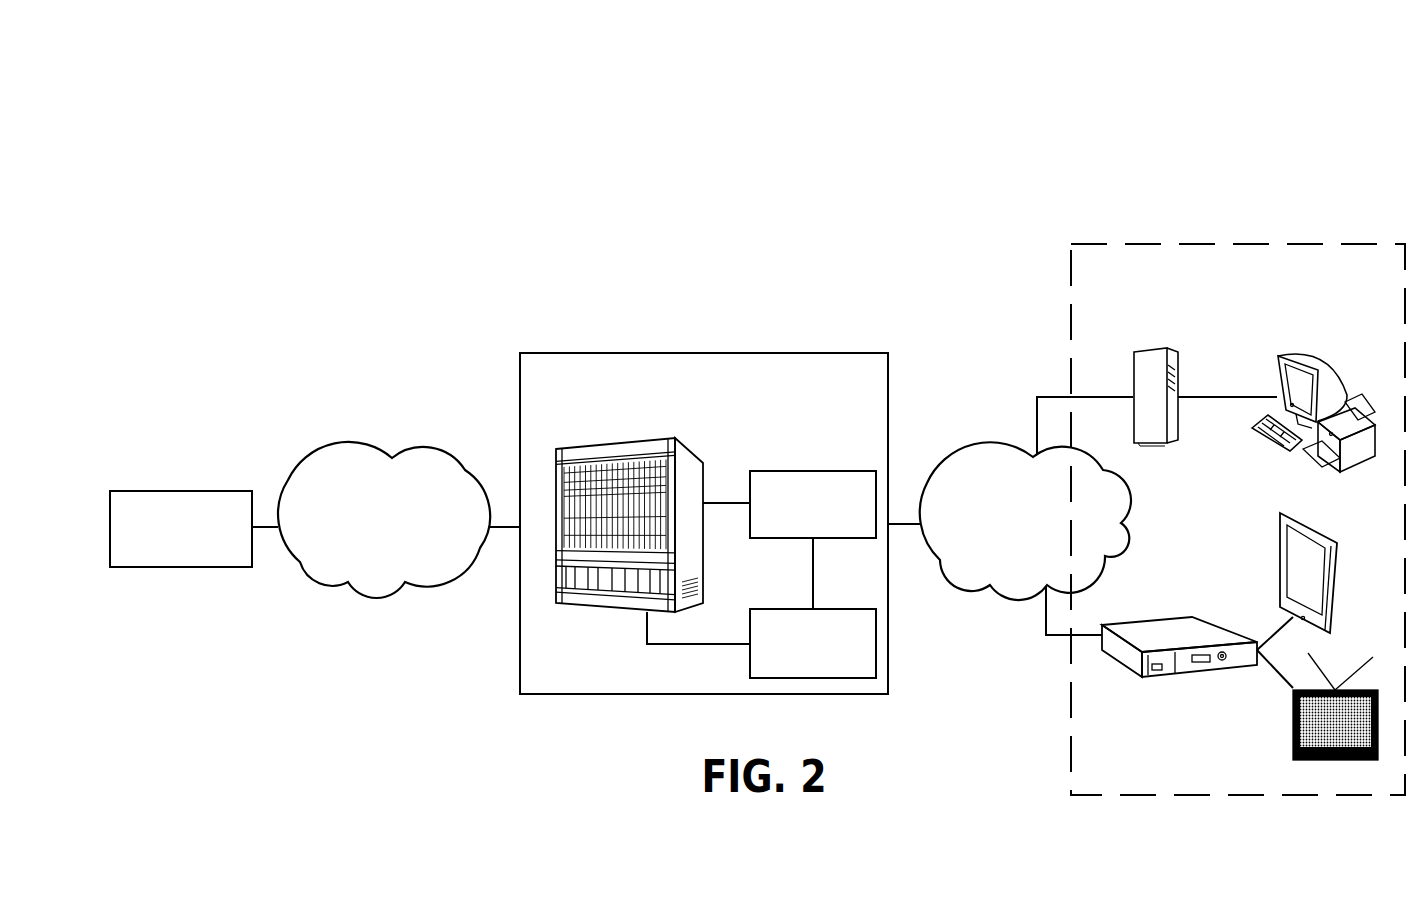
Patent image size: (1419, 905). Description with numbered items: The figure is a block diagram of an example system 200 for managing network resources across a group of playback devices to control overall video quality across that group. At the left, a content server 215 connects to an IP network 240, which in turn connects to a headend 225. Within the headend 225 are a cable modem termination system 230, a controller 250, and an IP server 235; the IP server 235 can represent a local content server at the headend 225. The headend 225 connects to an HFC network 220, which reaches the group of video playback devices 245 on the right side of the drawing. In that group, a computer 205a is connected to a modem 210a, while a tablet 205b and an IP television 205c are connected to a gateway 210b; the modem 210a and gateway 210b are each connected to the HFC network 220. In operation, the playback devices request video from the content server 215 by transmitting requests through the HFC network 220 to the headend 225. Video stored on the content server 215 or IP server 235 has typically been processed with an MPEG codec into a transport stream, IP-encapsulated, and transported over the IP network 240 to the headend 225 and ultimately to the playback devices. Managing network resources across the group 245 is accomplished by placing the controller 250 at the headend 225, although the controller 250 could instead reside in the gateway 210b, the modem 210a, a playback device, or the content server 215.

The content delivery system 200 is at (1348, 145).
The content server 215 is at (181, 489).
The IP network 240 is at (382, 598).
The headend 225 is at (842, 384).
The cable modem termination system (CMTS) 230 is at (607, 440).
The controller 250 is at (795, 470).
The IP server 235 is at (793, 608).
The HFC network 220 is at (1025, 600).
The group of playback devices 245 is at (1394, 281).
The modem 210a is at (1153, 350).
The computer 205a is at (1318, 356).
The tablet 205b is at (1291, 512).
The gateway 210b is at (1150, 682).
The IP television 205c is at (1292, 716).